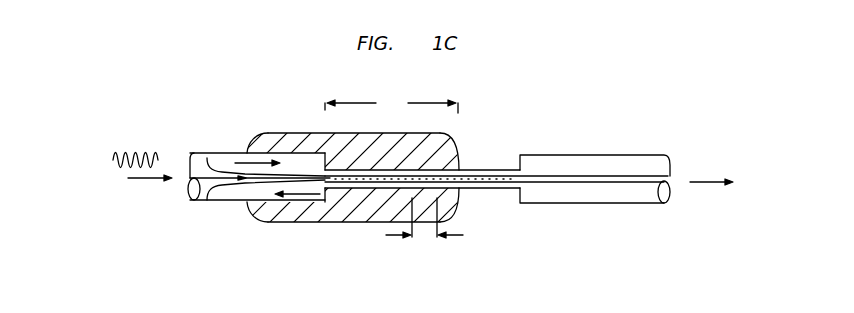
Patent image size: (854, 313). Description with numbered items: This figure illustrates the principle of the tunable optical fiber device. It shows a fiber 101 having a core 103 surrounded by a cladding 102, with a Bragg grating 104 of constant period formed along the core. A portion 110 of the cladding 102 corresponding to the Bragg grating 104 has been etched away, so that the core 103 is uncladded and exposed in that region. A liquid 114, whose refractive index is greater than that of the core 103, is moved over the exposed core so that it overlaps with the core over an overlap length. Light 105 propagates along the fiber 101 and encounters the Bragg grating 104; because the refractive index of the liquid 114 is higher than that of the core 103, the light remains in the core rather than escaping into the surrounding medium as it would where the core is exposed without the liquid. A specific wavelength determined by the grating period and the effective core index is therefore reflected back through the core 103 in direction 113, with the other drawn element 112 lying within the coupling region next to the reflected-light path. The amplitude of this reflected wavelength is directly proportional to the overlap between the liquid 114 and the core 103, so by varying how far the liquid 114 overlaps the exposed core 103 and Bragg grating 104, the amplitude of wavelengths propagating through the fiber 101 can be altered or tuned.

The fiber 101 is at (632, 94).
The cladding 102 is at (608, 202).
The core 103 is at (569, 172).
The Bragg grating 104 is at (494, 185).
The light 105 is at (110, 161).
The portion of the cladding 110 is at (498, 158).
The tapered fiber core 112 is at (347, 197).
The direction 113 is at (297, 197).
The liquid 114 is at (279, 133).